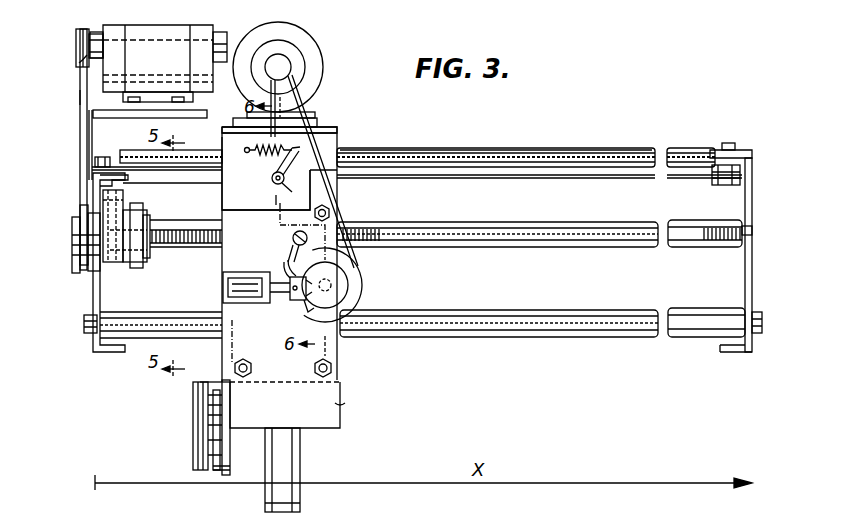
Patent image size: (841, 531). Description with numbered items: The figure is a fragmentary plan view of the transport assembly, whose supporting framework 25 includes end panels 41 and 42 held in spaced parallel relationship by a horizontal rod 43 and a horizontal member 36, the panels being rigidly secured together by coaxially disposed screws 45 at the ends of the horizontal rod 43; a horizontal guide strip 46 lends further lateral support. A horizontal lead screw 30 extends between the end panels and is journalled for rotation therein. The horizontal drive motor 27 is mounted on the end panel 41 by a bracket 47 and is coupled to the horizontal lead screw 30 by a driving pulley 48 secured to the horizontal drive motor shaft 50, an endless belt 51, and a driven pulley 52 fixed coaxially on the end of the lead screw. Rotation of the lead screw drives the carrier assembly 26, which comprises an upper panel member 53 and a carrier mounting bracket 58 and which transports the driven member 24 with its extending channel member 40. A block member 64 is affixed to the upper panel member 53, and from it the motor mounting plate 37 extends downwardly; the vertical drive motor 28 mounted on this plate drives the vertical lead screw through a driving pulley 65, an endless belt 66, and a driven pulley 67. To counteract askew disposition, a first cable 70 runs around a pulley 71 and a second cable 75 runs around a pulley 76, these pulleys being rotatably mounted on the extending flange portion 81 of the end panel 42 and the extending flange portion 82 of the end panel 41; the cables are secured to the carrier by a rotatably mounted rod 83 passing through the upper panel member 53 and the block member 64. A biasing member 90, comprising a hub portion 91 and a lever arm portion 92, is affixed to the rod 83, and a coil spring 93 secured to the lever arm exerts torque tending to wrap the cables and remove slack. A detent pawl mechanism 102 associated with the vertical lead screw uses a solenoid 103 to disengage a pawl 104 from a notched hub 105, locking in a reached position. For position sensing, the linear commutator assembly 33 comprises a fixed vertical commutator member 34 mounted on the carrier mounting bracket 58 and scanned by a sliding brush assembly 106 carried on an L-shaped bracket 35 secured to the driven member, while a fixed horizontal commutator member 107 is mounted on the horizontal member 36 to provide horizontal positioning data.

The driven member 24 is at (302, 460).
The supporting framework 25 is at (706, 289).
The carrier assembly 26 is at (346, 357).
The horizontal drive motor 27 is at (176, 50).
The vertical drive motor 28 is at (305, 45).
The horizontal lead screw 30 is at (195, 244).
The linear commutator assembly 33 is at (192, 440).
The fixed vertical commutator member 34 is at (222, 476).
The L-shaped bracket 35 is at (192, 405).
The horizontal member 36 is at (598, 160).
The motor mounting plate 37 is at (332, 133).
The channel member 40 is at (298, 504).
The end panel 41 is at (95, 292).
The end panel 42 is at (752, 270).
The horizontal rod 43 is at (598, 337).
The screws 45 is at (86, 331).
The horizontal guide strip 46 is at (582, 247).
The bracket 47 is at (88, 152).
The driving pulley 48 is at (77, 38).
The horizontal drive motor shaft 50 is at (80, 64).
The endless belt 51 is at (80, 97).
The driven pulley 52 is at (80, 208).
The upper panel member 53 is at (343, 406).
The carrier mounting bracket 58 is at (228, 443).
The block member 64 is at (255, 206).
The driving pulley 65 is at (285, 69).
The endless belt 66 is at (320, 152).
The driven pulley 67 is at (362, 284).
The first cable 70 is at (598, 178).
The pulley 71 is at (742, 183).
The second cable 75 is at (200, 180).
The pulley 76 is at (125, 183).
The extending flange portion 81 is at (742, 152).
The extending flange portion 82 is at (110, 166).
The rotatably mounted rod 83 is at (294, 195).
The biasing member 90 is at (276, 195).
The hub portion 91 is at (272, 178).
The lever arm portion 92 is at (290, 153).
The coil spring 93 is at (254, 152).
The detent pawl mechanism 102 is at (293, 294).
The solenoid 103 is at (238, 270).
The pawl 104 is at (293, 276).
The notched hub 105 is at (310, 303).
The sliding brush assembly 106 is at (206, 380).
The fixed horizontal commutator member 107 is at (512, 155).